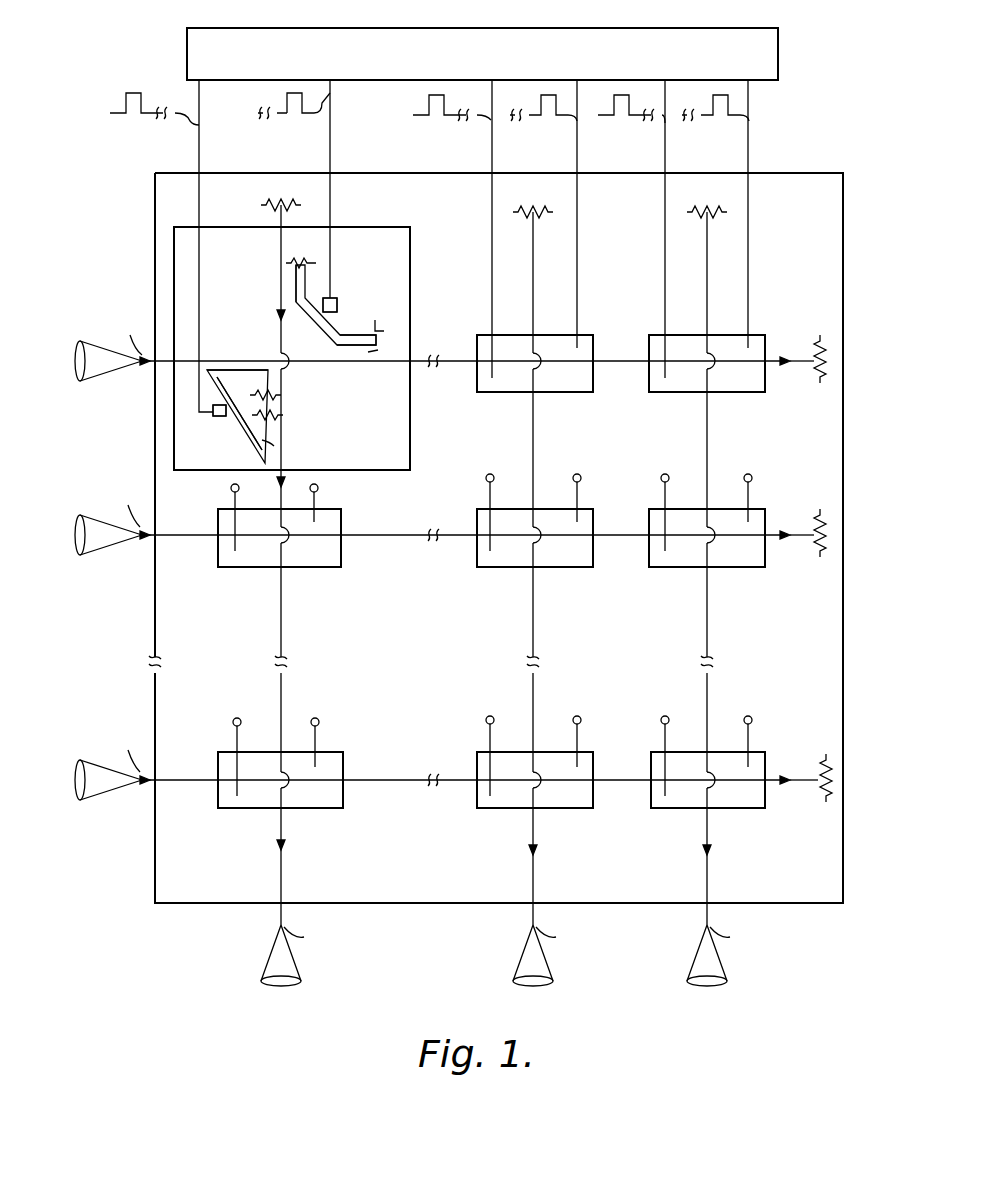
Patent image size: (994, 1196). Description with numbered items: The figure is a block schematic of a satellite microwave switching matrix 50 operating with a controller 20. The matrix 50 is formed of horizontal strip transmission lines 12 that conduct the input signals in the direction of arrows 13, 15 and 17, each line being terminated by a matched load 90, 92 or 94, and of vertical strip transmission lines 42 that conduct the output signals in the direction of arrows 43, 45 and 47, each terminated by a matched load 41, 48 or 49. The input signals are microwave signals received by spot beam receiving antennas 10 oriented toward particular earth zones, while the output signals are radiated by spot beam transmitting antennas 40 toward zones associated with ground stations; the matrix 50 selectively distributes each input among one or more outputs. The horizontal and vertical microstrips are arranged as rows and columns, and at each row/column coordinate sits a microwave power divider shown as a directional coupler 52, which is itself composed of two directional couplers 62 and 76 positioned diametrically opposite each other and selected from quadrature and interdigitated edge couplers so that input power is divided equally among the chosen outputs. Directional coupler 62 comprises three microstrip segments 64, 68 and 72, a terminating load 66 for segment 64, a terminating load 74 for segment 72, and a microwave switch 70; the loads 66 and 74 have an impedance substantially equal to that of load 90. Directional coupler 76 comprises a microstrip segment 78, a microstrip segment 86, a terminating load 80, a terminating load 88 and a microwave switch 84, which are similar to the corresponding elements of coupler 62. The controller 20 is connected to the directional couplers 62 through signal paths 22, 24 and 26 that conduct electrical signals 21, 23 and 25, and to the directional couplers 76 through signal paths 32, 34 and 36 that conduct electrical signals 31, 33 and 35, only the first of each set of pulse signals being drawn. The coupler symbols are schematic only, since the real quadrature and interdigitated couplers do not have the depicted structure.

The receiving antenna 10 is at (97, 345).
The horizontal strip transmission line 12 is at (150, 365).
The arrow 13 is at (115, 378).
The arrow 15 is at (117, 551).
The arrow 17 is at (117, 797).
The controller 20 is at (778, 28).
The electrical signal 21 is at (110, 113).
The signal path 22 is at (201, 137).
The electrical signal 23 is at (413, 115).
The signal path 24 is at (490, 142).
The electrical signal 25 is at (613, 115).
The signal path 26 is at (664, 143).
The electrical signal 31 is at (308, 114).
The signal path 32 is at (331, 150).
The electrical signal 33 is at (530, 120).
The signal path 34 is at (576, 142).
The electrical signal 35 is at (711, 118).
The signal path 36 is at (750, 145).
The transmitting antenna 40 is at (295, 972).
The load 41 is at (260, 205).
The vertical strip transmission line 42 is at (282, 886).
The arrow 43 is at (279, 318).
The arrow 45 is at (534, 853).
The arrow 47 is at (708, 853).
The load 48 is at (535, 212).
The load 49 is at (709, 212).
The microwave switching matrix 50 is at (805, 173).
The directional coupler 52 is at (388, 227).
The directional coupler 62 is at (218, 466).
The microstrip segment 64 is at (243, 368).
The terminating load 66 is at (282, 396).
The microstrip segment 68 is at (246, 422).
The microwave switch 70 is at (213, 424).
The microstrip segment 72 is at (276, 445).
The terminating load 74 is at (282, 415).
The directional coupler 76 is at (406, 269).
The microstrip segment 78 is at (362, 330).
The terminating load 80 is at (381, 339).
The microwave switch 84 is at (337, 312).
The microstrip segment 86 is at (306, 290).
The terminating load 88 is at (308, 248).
The load 90 is at (818, 377).
The load 92 is at (818, 554).
The load 94 is at (822, 799).